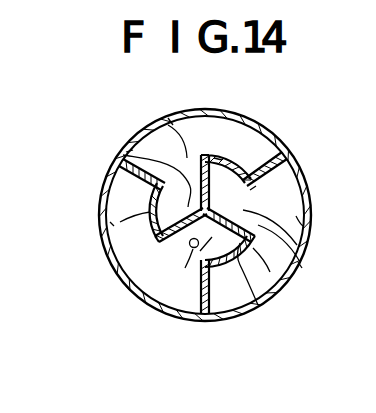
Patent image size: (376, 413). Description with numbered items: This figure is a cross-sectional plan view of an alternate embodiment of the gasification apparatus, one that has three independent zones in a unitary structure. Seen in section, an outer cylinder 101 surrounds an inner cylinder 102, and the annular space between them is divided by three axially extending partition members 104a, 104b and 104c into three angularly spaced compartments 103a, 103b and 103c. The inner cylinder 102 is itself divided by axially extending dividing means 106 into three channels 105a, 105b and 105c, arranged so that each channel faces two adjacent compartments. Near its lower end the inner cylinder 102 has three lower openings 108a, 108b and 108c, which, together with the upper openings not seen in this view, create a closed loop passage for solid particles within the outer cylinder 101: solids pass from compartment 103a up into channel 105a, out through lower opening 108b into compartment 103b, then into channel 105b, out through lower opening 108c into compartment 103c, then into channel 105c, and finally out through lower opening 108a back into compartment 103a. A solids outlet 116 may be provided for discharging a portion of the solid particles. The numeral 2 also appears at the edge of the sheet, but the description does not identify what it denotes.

The outer cylinder 101 is at (306, 184).
The inner cylinder 102 is at (255, 306).
The compartment 103a is at (125, 245).
The compartment 103b is at (206, 125).
The compartment 103c is at (280, 285).
The partition member 104a is at (190, 317).
The partition member 104b is at (108, 199).
The partition member 104c is at (285, 162).
The channel 105a is at (127, 155).
The channel 105b is at (303, 227).
The channel 105c is at (167, 258).
The dividing means 106 is at (221, 160).
The lower opening 108a is at (130, 289).
The lower opening 108b is at (172, 122).
The lower opening 108c is at (300, 266).
The solids outlet 116 is at (189, 244).
The valve 2 is at (371, 295).